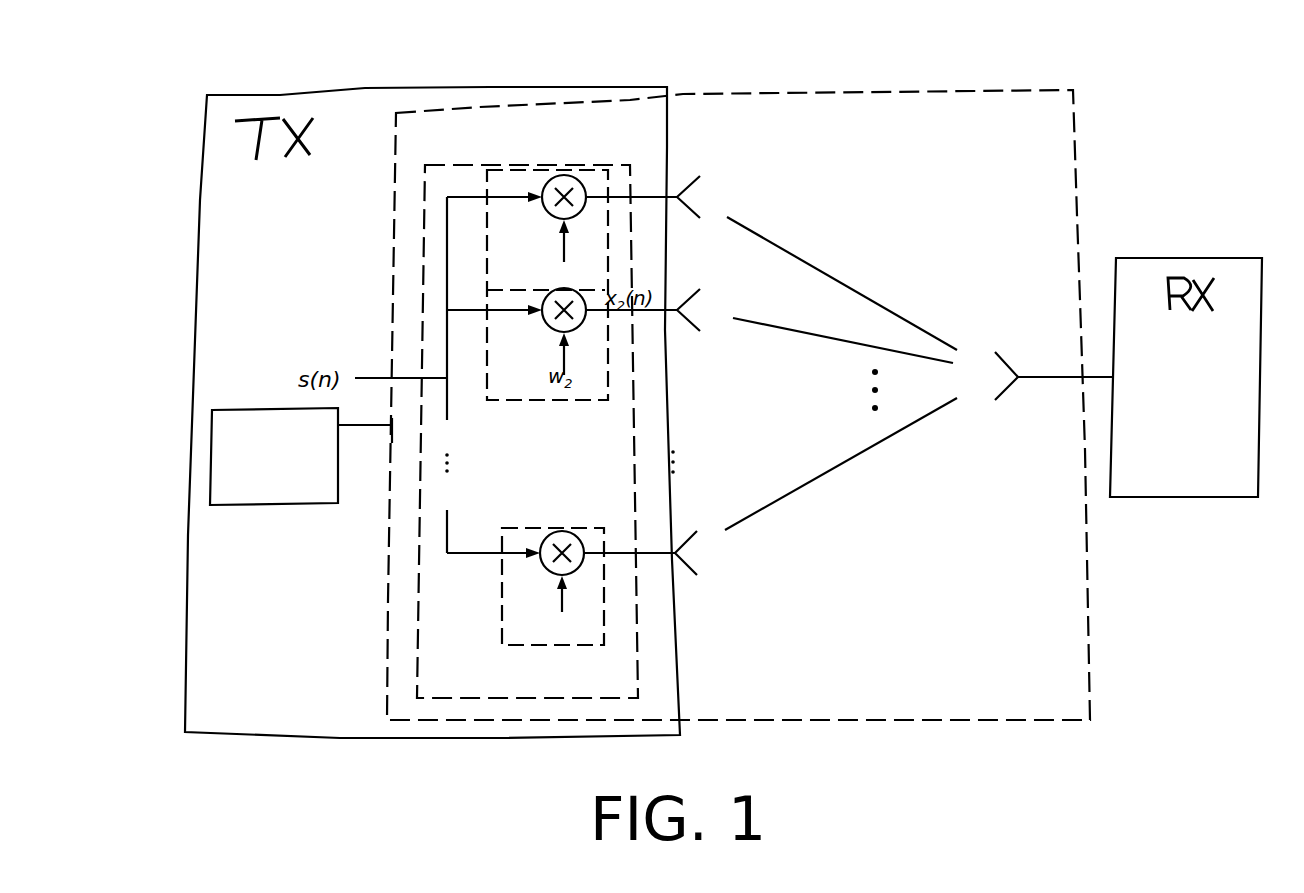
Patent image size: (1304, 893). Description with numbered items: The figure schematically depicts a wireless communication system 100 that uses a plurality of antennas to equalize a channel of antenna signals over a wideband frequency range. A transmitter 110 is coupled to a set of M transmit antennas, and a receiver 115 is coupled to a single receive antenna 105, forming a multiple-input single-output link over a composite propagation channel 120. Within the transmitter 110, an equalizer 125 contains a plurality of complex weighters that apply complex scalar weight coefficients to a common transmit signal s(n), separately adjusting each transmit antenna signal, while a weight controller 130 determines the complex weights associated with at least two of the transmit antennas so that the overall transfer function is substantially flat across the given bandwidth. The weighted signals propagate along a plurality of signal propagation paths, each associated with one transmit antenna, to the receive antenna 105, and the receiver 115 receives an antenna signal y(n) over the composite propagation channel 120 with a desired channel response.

The wireless communication system 100 is at (1152, 123).
The receive antenna 105 is at (1008, 385).
The transmitter 110 is at (365, 87).
The receiver 115 is at (1158, 257).
The composite propagation channel 120 is at (912, 90).
The equalizer 125 is at (645, 692).
The weight controller 130 is at (338, 447).